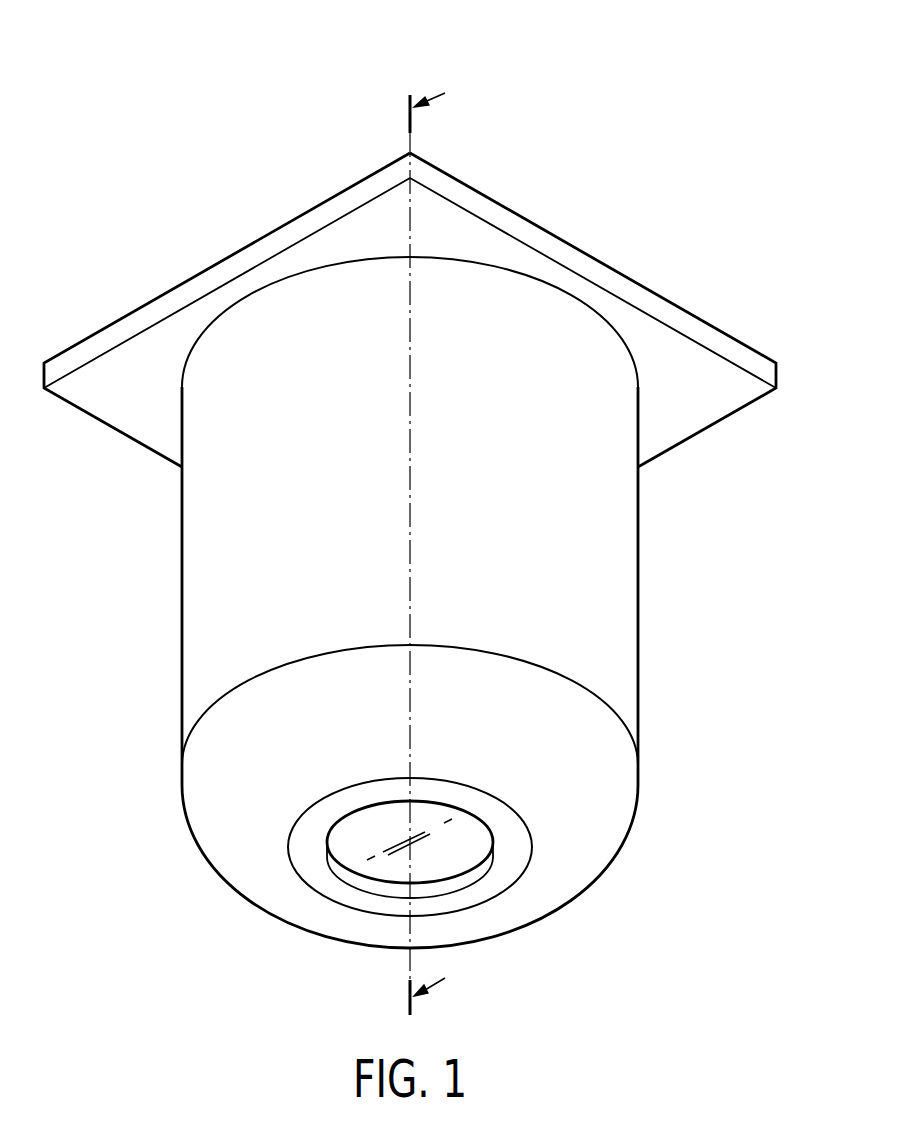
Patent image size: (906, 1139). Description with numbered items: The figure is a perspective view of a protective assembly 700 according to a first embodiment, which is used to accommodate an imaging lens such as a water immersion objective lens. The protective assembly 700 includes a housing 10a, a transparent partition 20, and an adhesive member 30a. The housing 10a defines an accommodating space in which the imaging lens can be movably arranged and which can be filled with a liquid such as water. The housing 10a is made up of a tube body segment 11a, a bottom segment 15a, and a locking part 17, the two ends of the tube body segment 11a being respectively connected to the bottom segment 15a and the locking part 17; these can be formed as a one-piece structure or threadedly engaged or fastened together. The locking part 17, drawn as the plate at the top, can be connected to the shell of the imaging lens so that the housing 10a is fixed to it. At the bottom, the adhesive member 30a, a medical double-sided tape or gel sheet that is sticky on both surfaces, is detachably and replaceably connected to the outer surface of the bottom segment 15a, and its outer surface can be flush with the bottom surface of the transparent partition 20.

The protective assembly 700 is at (105, 40).
The locking part 17 is at (575, 260).
The housing 10a is at (479, 602).
The tube body segment 11a is at (640, 500).
The bottom segment 15a is at (624, 840).
The adhesive member 30a is at (322, 877).
The transparent partition 20 is at (473, 873).